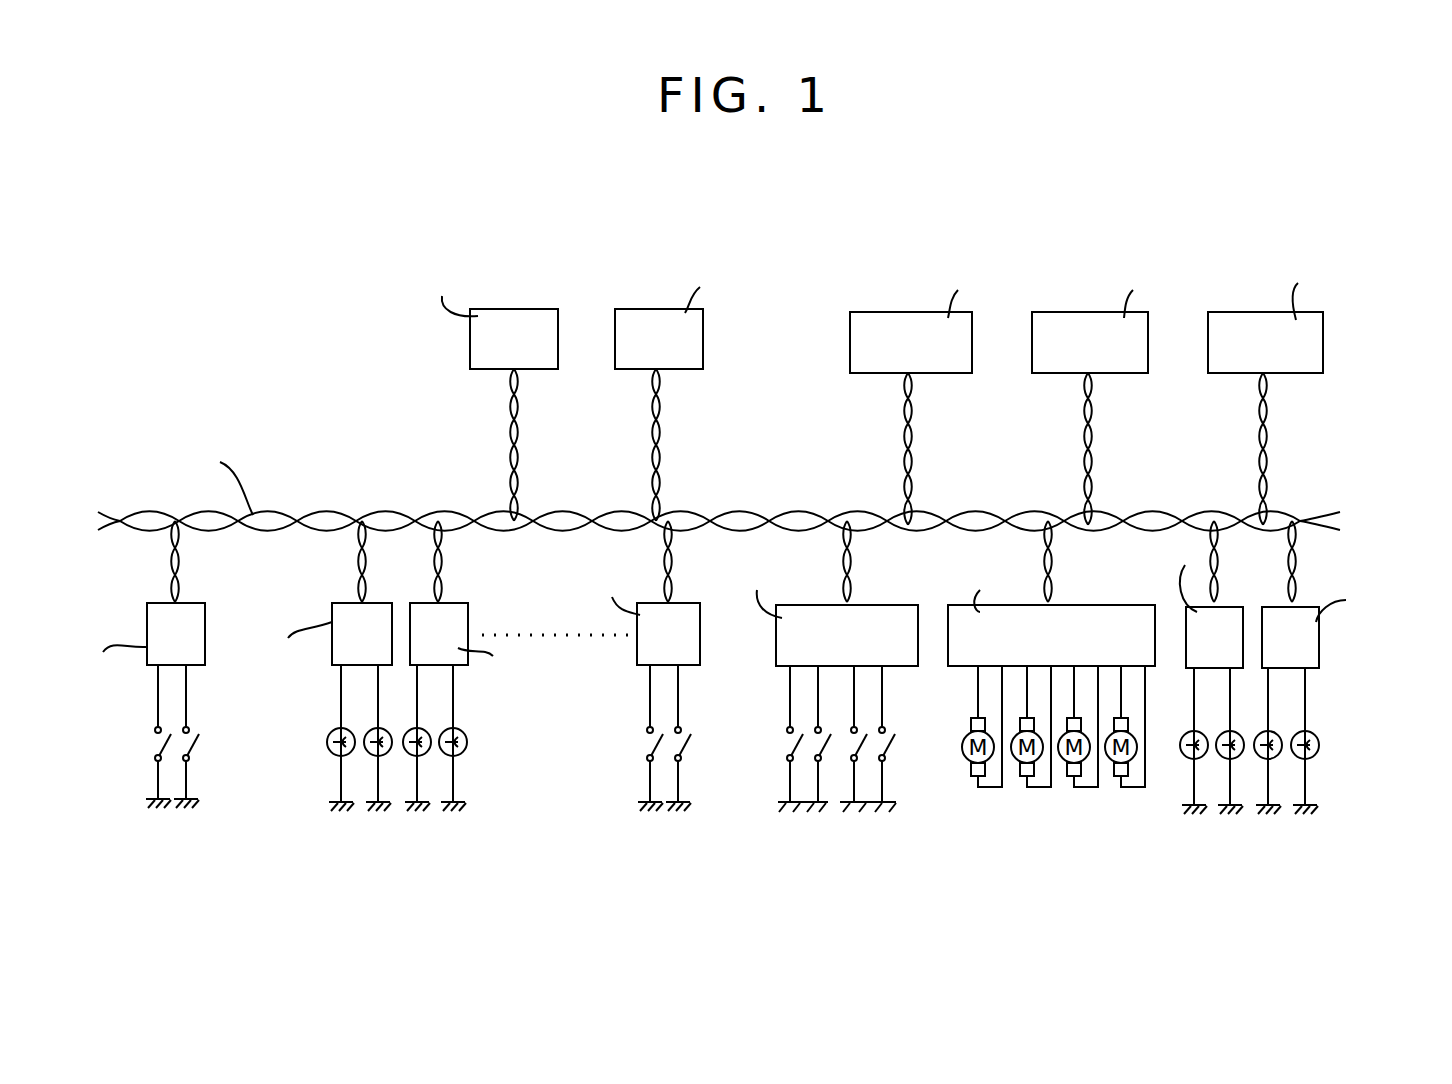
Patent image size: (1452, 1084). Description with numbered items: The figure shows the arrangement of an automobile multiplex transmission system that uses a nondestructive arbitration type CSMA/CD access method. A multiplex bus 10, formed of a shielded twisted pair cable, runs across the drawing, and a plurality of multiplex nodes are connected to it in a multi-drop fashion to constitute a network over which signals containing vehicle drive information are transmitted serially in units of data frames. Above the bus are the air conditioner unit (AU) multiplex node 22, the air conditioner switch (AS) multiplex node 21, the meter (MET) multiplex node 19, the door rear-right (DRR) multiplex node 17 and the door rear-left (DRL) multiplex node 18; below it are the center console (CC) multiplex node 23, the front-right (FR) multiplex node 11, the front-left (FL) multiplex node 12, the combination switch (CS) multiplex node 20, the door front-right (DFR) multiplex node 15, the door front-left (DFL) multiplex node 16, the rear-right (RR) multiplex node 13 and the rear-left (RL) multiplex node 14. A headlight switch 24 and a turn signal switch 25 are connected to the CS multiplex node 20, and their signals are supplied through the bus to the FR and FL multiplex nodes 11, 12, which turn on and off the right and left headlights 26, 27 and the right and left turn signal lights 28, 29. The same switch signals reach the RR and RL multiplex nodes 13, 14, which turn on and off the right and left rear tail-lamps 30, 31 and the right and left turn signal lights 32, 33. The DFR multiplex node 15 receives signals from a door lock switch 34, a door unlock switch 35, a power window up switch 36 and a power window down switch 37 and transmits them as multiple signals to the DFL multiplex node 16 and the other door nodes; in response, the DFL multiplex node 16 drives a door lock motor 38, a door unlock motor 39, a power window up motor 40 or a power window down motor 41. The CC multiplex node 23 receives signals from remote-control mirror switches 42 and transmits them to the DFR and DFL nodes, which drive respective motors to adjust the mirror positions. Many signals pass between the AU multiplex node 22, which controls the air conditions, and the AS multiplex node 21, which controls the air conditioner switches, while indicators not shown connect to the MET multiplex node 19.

The multiplex bus 10 is at (275, 512).
The front-right (FR) multiplex node 11 is at (387, 603).
The front-left (FL) multiplex node 12 is at (466, 603).
The rear-right (RR) multiplex node 13 is at (1238, 607).
The rear-left (RL) multiplex node 14 is at (1316, 607).
The door front-right (DFR) multiplex node 15 is at (894, 605).
The door front-left (DFL) multiplex node 16 is at (1100, 605).
The door rear-right (DRR) multiplex node 17 is at (1087, 312).
The door rear-left (DRL) multiplex node 18 is at (1263, 312).
The meter (MET) multiplex node 19 is at (905, 312).
The combination switch (CS) multiplex node 20 is at (696, 603).
The air conditioner switch (AS) multiplex node 21 is at (652, 309).
The air conditioner unit (AU) multiplex node 22 is at (517, 309).
The center console (CC) multiplex node 23 is at (195, 603).
The headlight switch 24 is at (642, 748).
The turn signal switch 25 is at (681, 750).
The right headlight 26 is at (330, 737).
The left headlight 27 is at (408, 732).
The right turn signal light 28 is at (370, 731).
The left turn signal light 29 is at (446, 732).
The right rear tail-lamp 30 is at (1182, 739).
The left rear tail-lamp 31 is at (1258, 735).
The right turn signal light 32 is at (1220, 735).
The left turn signal light 33 is at (1296, 735).
The door lock switch 34 is at (783, 750).
The door unlock switch 35 is at (811, 750).
The power window up switch 36 is at (847, 750).
The power window down switch 37 is at (882, 745).
The door lock motor 38 is at (965, 765).
The door unlock motor 39 is at (1017, 768).
The power window up motor 40 is at (1064, 768).
The power window down motor 41 is at (1111, 768).
The remote-control mirror switches 42 is at (232, 812).